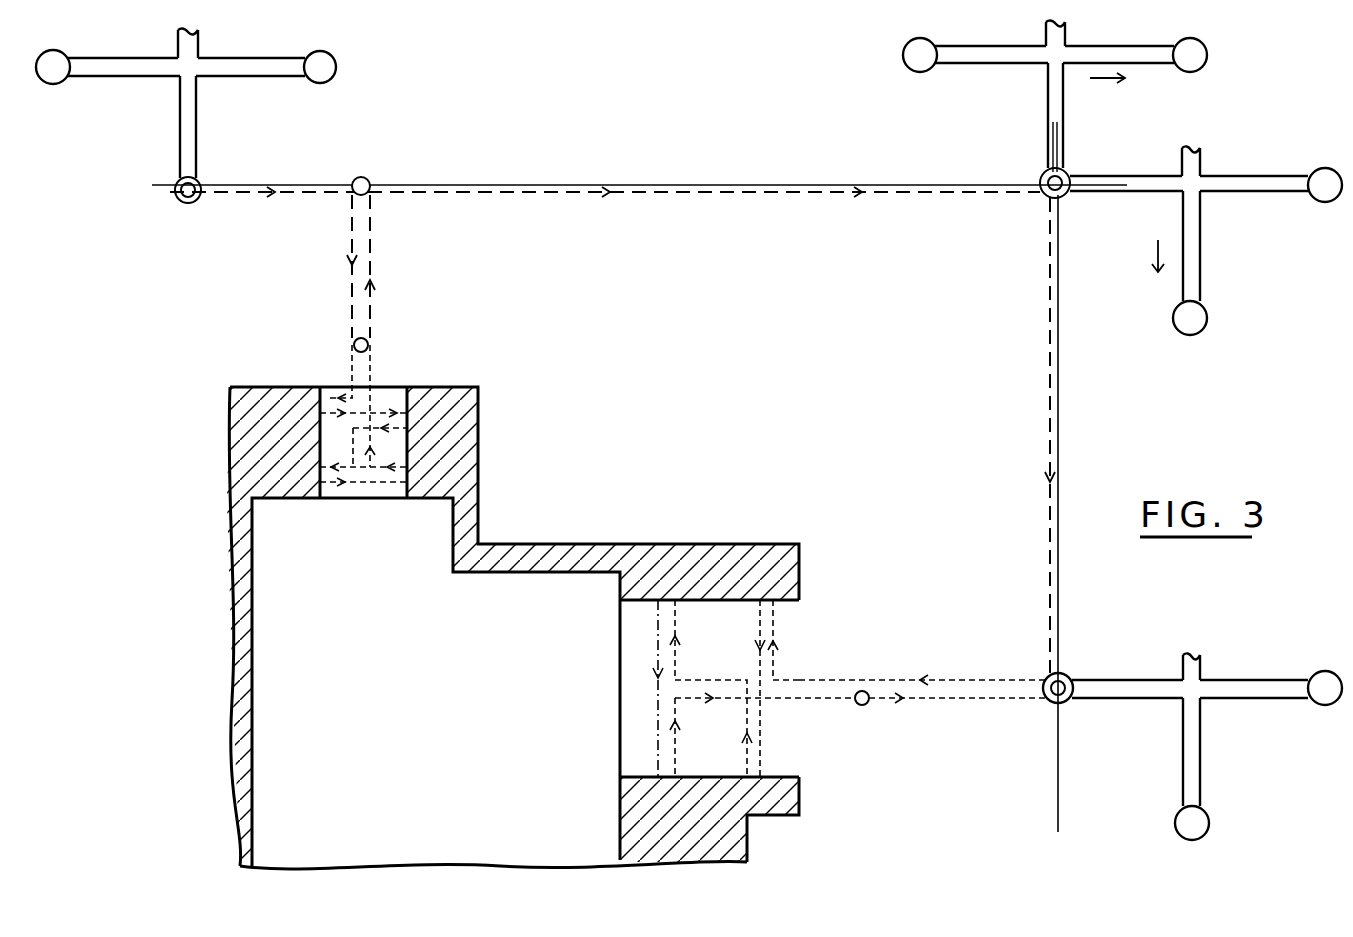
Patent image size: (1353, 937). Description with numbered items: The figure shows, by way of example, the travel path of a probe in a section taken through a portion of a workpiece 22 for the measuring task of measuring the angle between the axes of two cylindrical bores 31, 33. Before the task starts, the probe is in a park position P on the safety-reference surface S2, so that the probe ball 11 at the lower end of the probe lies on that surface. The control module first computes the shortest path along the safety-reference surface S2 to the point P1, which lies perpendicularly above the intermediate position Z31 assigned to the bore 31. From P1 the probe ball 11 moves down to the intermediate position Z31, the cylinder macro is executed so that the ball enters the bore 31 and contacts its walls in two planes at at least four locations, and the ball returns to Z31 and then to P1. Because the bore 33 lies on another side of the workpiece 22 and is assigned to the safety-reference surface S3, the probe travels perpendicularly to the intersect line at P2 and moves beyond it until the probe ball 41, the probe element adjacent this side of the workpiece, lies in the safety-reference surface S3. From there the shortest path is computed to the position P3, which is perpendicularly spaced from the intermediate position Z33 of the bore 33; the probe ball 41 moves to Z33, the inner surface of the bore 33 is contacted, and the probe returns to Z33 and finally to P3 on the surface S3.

The probe ball 11 is at (200, 182).
The workpiece 22 is at (478, 482).
The bore 31 is at (400, 404).
The bore 33 is at (744, 600).
The probe ball 41 is at (55, 72).
The park position P is at (192, 203).
The point P1 is at (366, 178).
The second intermediate point (L2) P2 is at (1068, 174).
The position P3 is at (1062, 690).
The safety-reference surface S2 is at (643, 185).
The safety-reference surface S3 is at (1058, 620).
The intermediate position Z31 is at (354, 348).
The intermediate position Z33 is at (862, 706).